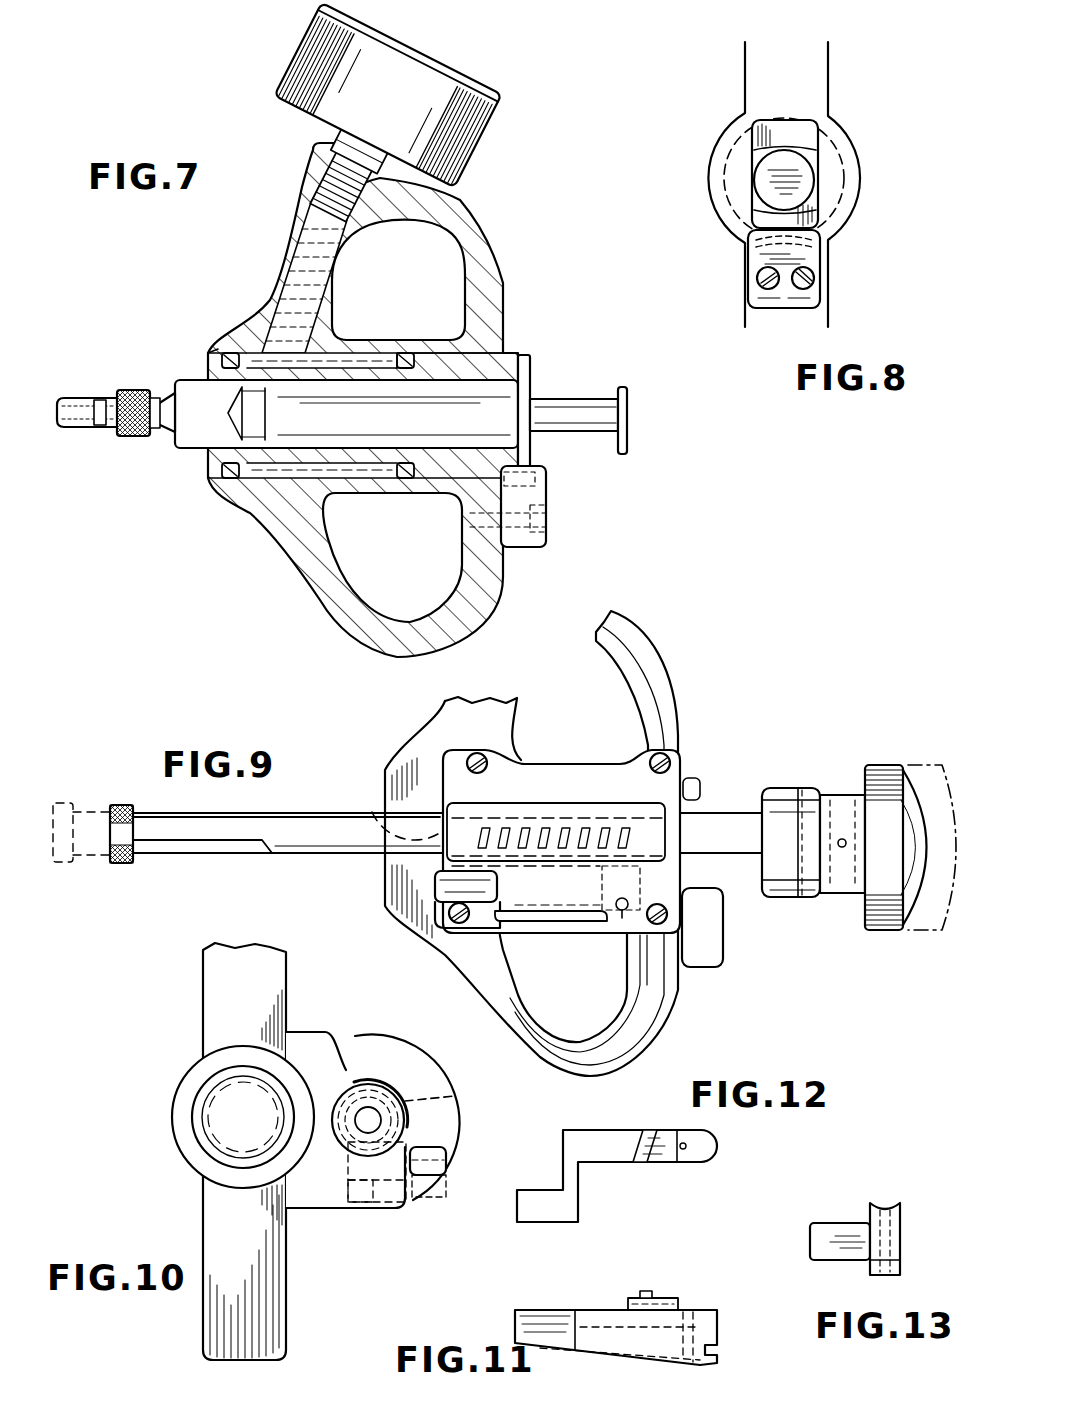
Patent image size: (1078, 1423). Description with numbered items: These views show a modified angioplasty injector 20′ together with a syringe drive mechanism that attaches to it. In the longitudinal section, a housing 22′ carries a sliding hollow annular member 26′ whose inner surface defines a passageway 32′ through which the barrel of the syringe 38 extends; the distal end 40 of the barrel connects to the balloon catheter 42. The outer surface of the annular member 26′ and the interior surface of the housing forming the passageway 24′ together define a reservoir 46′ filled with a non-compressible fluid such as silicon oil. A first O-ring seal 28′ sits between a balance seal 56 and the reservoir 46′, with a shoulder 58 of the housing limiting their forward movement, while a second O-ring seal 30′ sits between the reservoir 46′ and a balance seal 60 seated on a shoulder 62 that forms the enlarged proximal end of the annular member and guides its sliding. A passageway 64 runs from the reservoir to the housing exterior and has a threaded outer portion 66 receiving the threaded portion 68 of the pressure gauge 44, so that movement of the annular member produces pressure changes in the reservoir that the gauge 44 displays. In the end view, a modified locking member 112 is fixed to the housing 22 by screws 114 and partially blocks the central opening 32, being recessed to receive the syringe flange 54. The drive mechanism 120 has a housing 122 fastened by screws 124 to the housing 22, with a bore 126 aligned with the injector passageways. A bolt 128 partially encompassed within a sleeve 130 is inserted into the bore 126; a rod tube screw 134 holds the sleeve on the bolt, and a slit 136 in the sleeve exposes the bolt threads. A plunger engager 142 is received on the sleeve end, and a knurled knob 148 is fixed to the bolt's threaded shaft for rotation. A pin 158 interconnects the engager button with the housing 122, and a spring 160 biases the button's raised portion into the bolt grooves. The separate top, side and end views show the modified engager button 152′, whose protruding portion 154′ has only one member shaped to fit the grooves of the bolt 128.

In FIG. 7, the injector 20′ is at (500, 200).
In FIG. 7, the housing 22′ is at (251, 510).
In FIG. 7, the passageway 24′ is at (496, 439).
In FIG. 7, the annular member 26′ is at (513, 361).
In FIG. 7, the first O-ring seal 28′ is at (234, 358).
In FIG. 7, the second O-ring seal 30′ is at (403, 358).
In FIG. 7, the passageway 32′ is at (189, 395).
In FIG. 7, the syringe 38 is at (573, 385).
In FIG. 7, the distal end 40 is at (131, 390).
In FIG. 7, the balloon catheter 42 is at (73, 399).
In FIG. 7, the pressure gauge 44 is at (496, 94).
In FIG. 7, the reservoir 46′ is at (343, 358).
In FIG. 7, the syringe flange 54 is at (529, 369).
In FIG. 8, the syringe flange 54 is at (779, 116).
In FIG. 7, the balance seal 56 is at (221, 468).
In FIG. 7, the shoulder 58 is at (224, 362).
In FIG. 7, the balance seal 60 is at (420, 359).
In FIG. 7, the shoulder 62 is at (431, 470).
In FIG. 7, the passageway 64 is at (311, 256).
In FIG. 7, the threaded outer portion 66 is at (333, 175).
In FIG. 7, the threaded portion 68 is at (317, 166).
In FIG. 8, the housing 22 is at (843, 88).
In FIG. 9, the housing 22 is at (662, 629).
In FIG. 10, the housing 22 is at (279, 981).
In FIG. 8, the central opening 32 is at (827, 139).
In FIG. 10, the central opening 32 is at (258, 1136).
In FIG. 8, the locking member 112 is at (822, 258).
In FIG. 8, the screws 114 is at (757, 287).
In FIG. 9, the drive mechanism 120 is at (690, 760).
In FIG. 10, the drive mechanism 120 is at (387, 1226).
In FIG. 9, the housing 122 is at (543, 782).
In FIG. 10, the housing 122 is at (312, 1042).
In FIG. 9, the screws 124 is at (478, 772).
In FIG. 9, the bore 126 is at (377, 817).
In FIG. 10, the bolt 128 is at (382, 1098).
In FIG. 9, the sleeve 130 is at (447, 859).
In FIG. 10, the sleeve 130 is at (455, 1096).
In FIG. 9, the rod tube screw 134 is at (119, 866).
In FIG. 10, the rod tube screw 134 is at (347, 1140).
In FIG. 9, the slit 136 is at (316, 854).
In FIG. 9, the plunger engager 142 is at (788, 787).
In FIG. 10, the plunger engager 142 is at (380, 1076).
In FIG. 9, the knurled knob 148 is at (884, 767).
In FIG. 10, the knurled knob 148 is at (457, 1132).
In FIG. 9, the pin 158 is at (619, 921).
In FIG. 9, the spring 160 is at (547, 923).
In FIG. 11, the engager button 152′ is at (605, 1300).
In FIG. 12, the engager button 152′ is at (625, 1175).
In FIG. 13, the engager button 152′ is at (853, 1208).
In FIG. 11, the protruding portion 154′ is at (643, 1292).
In FIG. 12, the protruding portion 154′ is at (643, 1130).